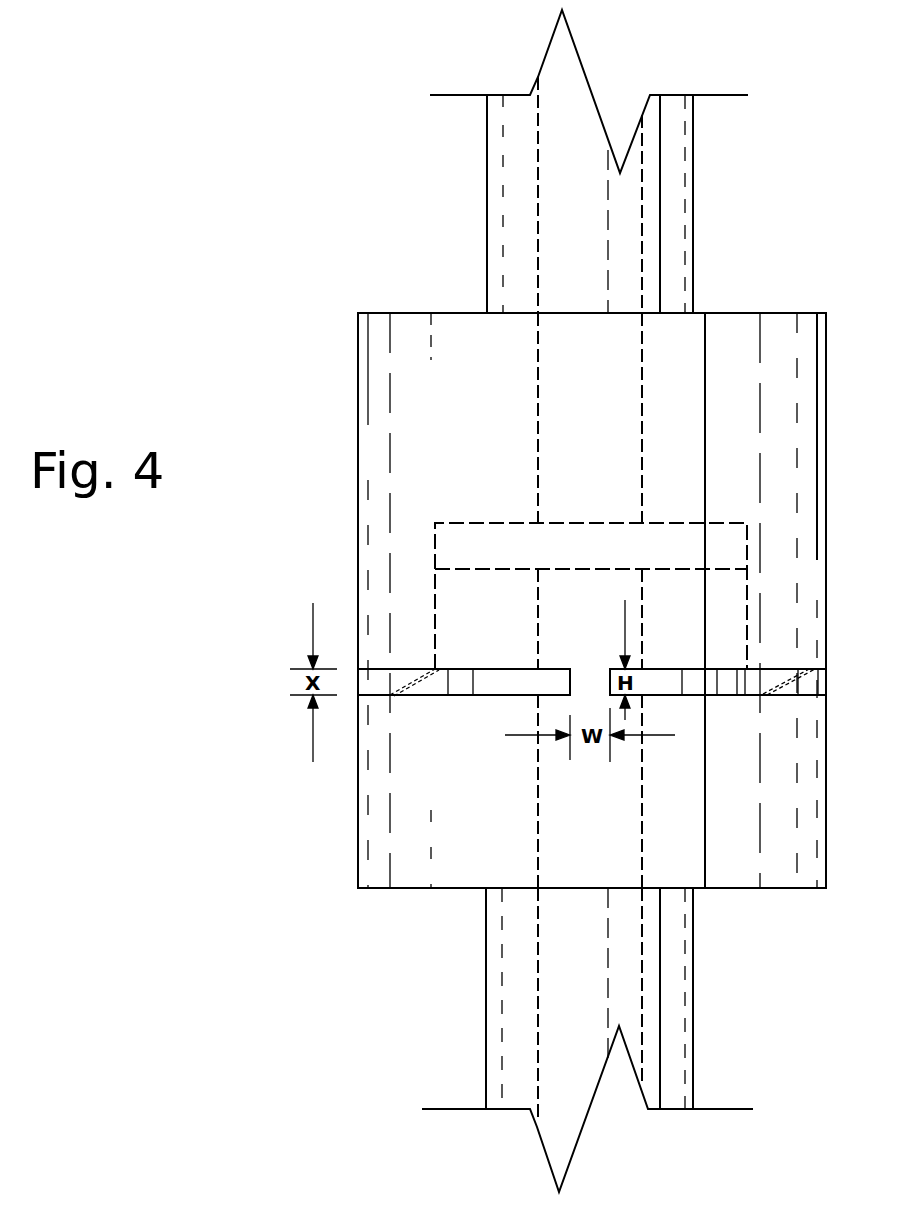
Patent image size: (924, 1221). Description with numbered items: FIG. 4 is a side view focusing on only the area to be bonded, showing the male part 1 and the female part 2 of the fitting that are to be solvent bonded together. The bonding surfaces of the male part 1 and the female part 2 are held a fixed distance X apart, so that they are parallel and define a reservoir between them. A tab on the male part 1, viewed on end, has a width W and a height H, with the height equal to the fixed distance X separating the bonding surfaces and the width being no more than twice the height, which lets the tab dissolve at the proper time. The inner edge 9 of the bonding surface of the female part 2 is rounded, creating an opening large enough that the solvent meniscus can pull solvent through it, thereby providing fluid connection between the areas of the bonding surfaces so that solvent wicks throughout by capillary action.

The male part 1 is at (243, 998).
The female part 2 is at (266, 266).
The inner edge 9 is at (434, 655).